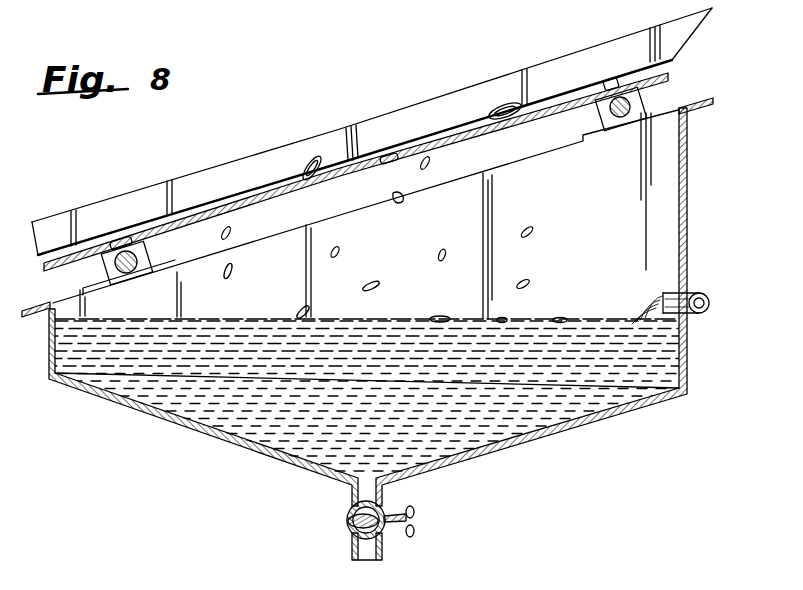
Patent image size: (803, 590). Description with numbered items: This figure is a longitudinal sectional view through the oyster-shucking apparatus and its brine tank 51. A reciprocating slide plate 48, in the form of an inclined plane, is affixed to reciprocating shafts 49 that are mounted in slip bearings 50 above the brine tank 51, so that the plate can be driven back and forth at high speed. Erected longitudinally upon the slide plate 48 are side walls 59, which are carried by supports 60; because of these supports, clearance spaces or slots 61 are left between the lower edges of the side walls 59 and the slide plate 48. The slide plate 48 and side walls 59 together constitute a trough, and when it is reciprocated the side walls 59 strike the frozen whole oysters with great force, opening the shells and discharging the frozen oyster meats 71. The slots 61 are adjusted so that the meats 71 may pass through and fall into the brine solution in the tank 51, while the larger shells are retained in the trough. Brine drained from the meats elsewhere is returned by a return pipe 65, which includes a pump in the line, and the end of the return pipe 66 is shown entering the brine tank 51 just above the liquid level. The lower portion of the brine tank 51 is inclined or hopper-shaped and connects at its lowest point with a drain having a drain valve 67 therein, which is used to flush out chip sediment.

The reciprocating slide plate 48 is at (468, 140).
The reciprocating shafts 49 is at (138, 255).
The slip bearings 50 is at (108, 268).
The brine tank 51 is at (212, 423).
The side walls 59 is at (284, 148).
The supports 60 is at (63, 252).
The clearance space or slots 61 is at (187, 213).
The return pipe 65 is at (706, 295).
The end of the return pipe 66 is at (668, 292).
The drain valve 67 is at (352, 533).
The frozen oyster meats 71 is at (391, 167).